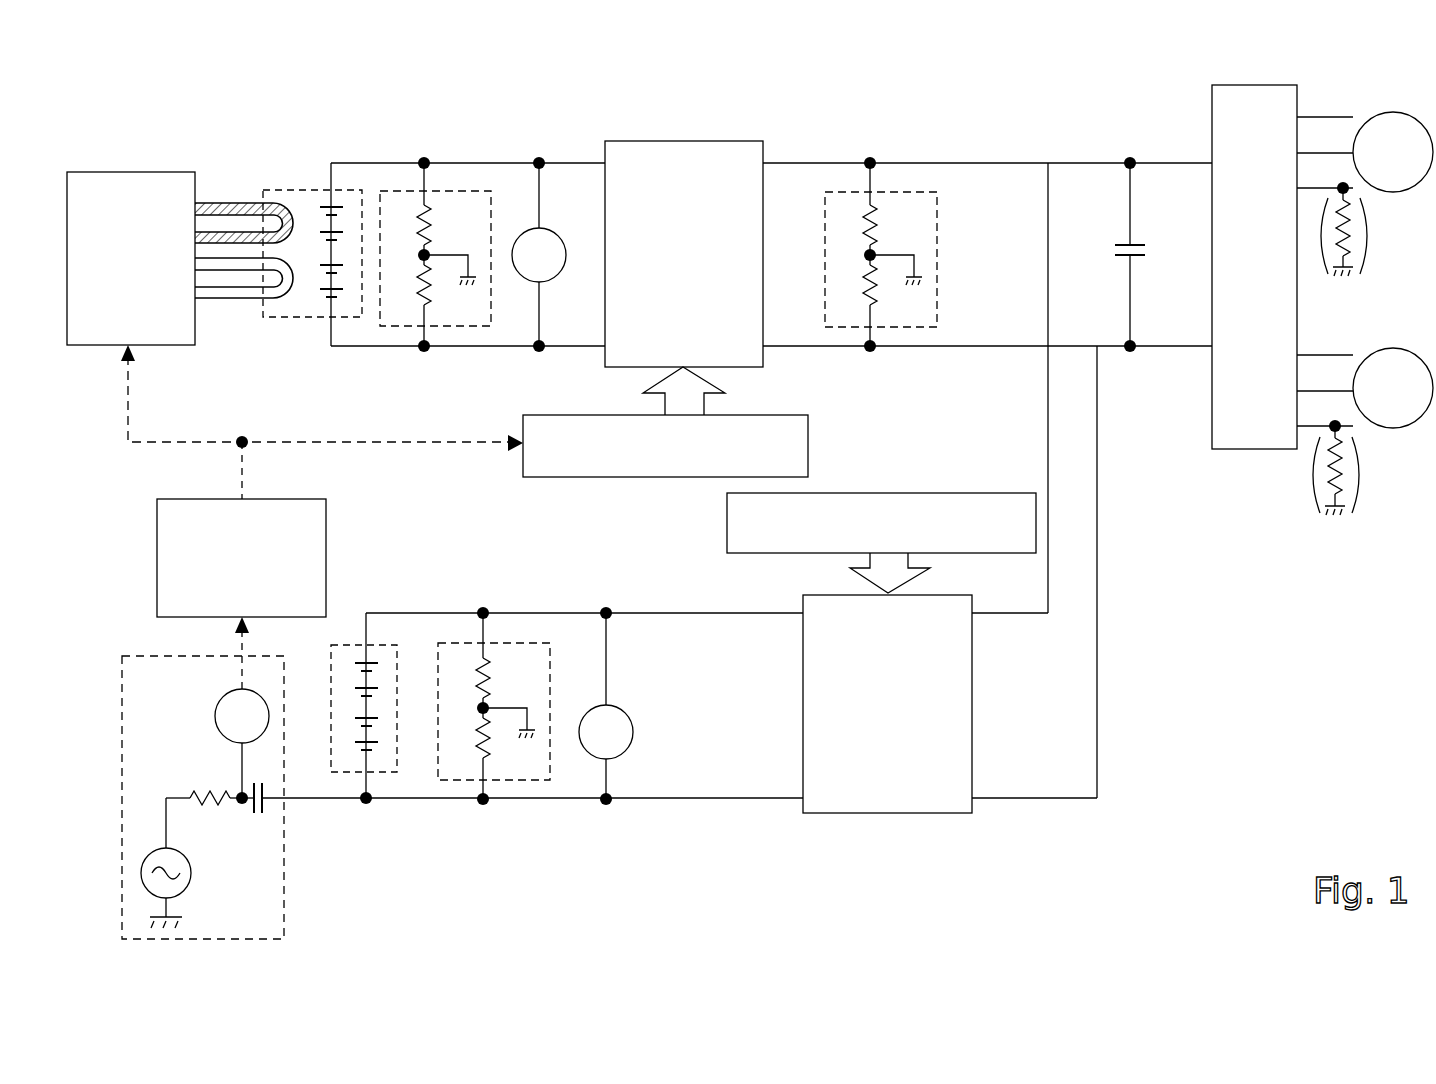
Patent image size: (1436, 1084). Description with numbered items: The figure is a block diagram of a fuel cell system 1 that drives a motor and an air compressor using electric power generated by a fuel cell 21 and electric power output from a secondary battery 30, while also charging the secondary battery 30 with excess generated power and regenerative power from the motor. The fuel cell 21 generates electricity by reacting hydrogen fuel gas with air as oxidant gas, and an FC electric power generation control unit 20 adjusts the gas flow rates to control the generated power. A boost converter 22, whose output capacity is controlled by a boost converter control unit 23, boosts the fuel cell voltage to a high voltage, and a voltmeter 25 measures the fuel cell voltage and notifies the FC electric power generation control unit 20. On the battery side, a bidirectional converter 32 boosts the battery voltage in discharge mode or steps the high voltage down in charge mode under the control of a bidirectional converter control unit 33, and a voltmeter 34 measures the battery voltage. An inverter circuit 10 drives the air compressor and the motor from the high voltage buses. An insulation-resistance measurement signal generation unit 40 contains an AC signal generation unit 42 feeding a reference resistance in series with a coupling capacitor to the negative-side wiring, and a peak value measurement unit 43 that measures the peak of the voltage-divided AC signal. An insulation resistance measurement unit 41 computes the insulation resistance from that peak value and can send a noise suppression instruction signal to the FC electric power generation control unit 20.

The fuel cell system 1 is at (1026, 88).
The inverter circuit 10 is at (1210, 129).
The FC electric power generation control unit 20 is at (130, 170).
The fuel cell 21 is at (308, 190).
The boost converter 22 is at (683, 141).
The boost converter control unit 23 is at (808, 450).
The voltmeter 25 is at (532, 228).
The secondary battery 30 is at (346, 645).
The bidirectional converter 32 is at (972, 716).
The bidirectional converter control unit 33 is at (902, 493).
The voltmeter 34 is at (598, 704).
The insulation-resistance measurement signal generation unit 40 is at (146, 656).
The insulation resistance measurement unit 41 is at (157, 556).
The AC signal generation unit 42 is at (193, 879).
The peak value measurement unit 43 is at (214, 714).